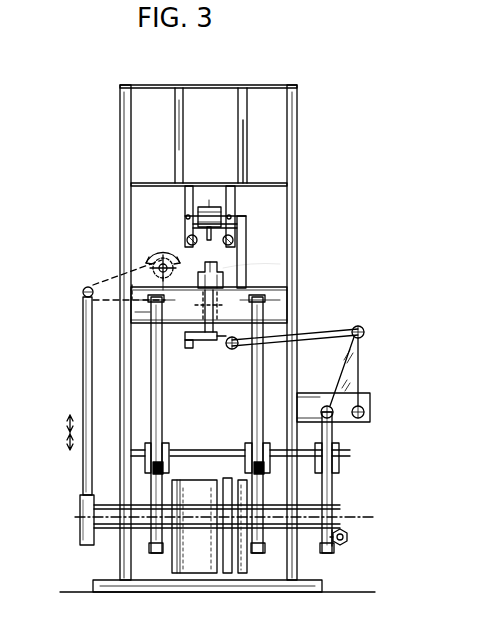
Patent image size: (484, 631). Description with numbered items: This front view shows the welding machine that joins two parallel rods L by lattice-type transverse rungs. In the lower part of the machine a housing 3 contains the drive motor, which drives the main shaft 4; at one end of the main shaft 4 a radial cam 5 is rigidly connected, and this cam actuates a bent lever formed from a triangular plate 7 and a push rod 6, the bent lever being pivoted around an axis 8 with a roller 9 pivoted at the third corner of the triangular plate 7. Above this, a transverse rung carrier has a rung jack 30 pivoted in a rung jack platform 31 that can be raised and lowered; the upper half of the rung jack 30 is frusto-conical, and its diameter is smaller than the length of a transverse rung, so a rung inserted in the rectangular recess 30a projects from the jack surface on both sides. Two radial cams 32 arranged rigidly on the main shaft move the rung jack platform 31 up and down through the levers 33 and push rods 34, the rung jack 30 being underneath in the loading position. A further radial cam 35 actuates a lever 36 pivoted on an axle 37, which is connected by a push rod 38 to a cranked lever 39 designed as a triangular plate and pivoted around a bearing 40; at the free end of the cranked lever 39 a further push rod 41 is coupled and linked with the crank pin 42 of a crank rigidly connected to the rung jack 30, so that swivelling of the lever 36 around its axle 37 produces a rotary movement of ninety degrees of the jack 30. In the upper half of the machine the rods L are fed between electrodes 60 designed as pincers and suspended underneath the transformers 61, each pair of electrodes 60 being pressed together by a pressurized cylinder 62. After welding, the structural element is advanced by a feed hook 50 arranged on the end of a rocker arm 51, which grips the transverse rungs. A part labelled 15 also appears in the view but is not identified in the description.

The housing 3 is at (200, 501).
The main shaft 4 is at (112, 528).
The radial cam 5 is at (84, 544).
The push rod 6 is at (84, 372).
The triangular plate 7 is at (100, 286).
The axis 8 is at (170, 290).
The roller 9 is at (158, 262).
The adjusting nut 15 is at (348, 541).
The rung jack 30 is at (224, 279).
The rectangular recess 30a is at (224, 268).
The rung jack platform 31 is at (186, 320).
The radial cams 32 is at (264, 548).
The levers 33 is at (250, 468).
The push rods 34 is at (252, 405).
The radial cam 35 is at (333, 498).
The lever 36 is at (343, 453).
The axle 37 is at (272, 446).
The push rod 38 is at (300, 440).
The cranked lever 39 is at (360, 380).
The bearing 40 is at (365, 412).
The push rod 41 is at (320, 339).
The crank pin 42 is at (193, 346).
The feed hook 50 is at (235, 225).
The rocker arm 51 is at (246, 264).
The electrodes 60 is at (233, 194).
The transformers 61 is at (216, 145).
The pressurized cylinder 62 is at (198, 215).
The rods L is at (234, 238).